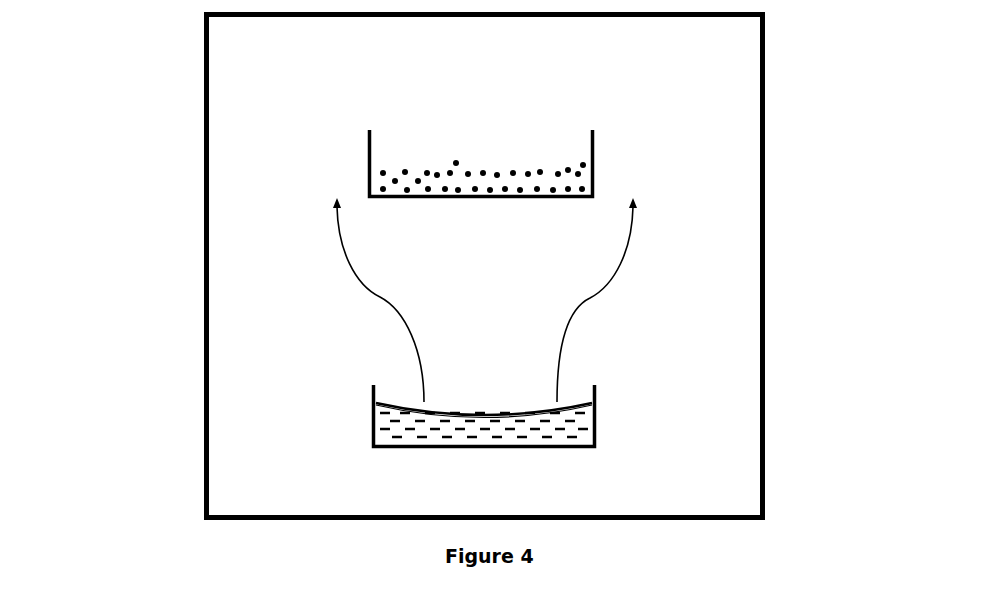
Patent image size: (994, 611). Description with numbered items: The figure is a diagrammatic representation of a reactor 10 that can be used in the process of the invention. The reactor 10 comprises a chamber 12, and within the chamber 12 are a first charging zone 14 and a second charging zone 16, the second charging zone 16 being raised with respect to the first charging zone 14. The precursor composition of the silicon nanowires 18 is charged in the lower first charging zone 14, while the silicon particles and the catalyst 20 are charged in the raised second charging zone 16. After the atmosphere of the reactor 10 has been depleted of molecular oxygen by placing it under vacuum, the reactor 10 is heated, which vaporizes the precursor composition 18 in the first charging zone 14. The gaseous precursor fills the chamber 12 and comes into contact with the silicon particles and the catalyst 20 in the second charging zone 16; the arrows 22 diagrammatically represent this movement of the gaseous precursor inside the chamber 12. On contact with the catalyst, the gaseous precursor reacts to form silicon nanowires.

The reactor 10 is at (770, 293).
The chamber 12 is at (725, 367).
The first charging zone 14 is at (604, 420).
The second charging zone 16 is at (602, 157).
The precursor composition of the silicon nanowires 18 is at (415, 423).
The silicon particles and catalyst 20 is at (460, 159).
The arrows 22 is at (312, 218).